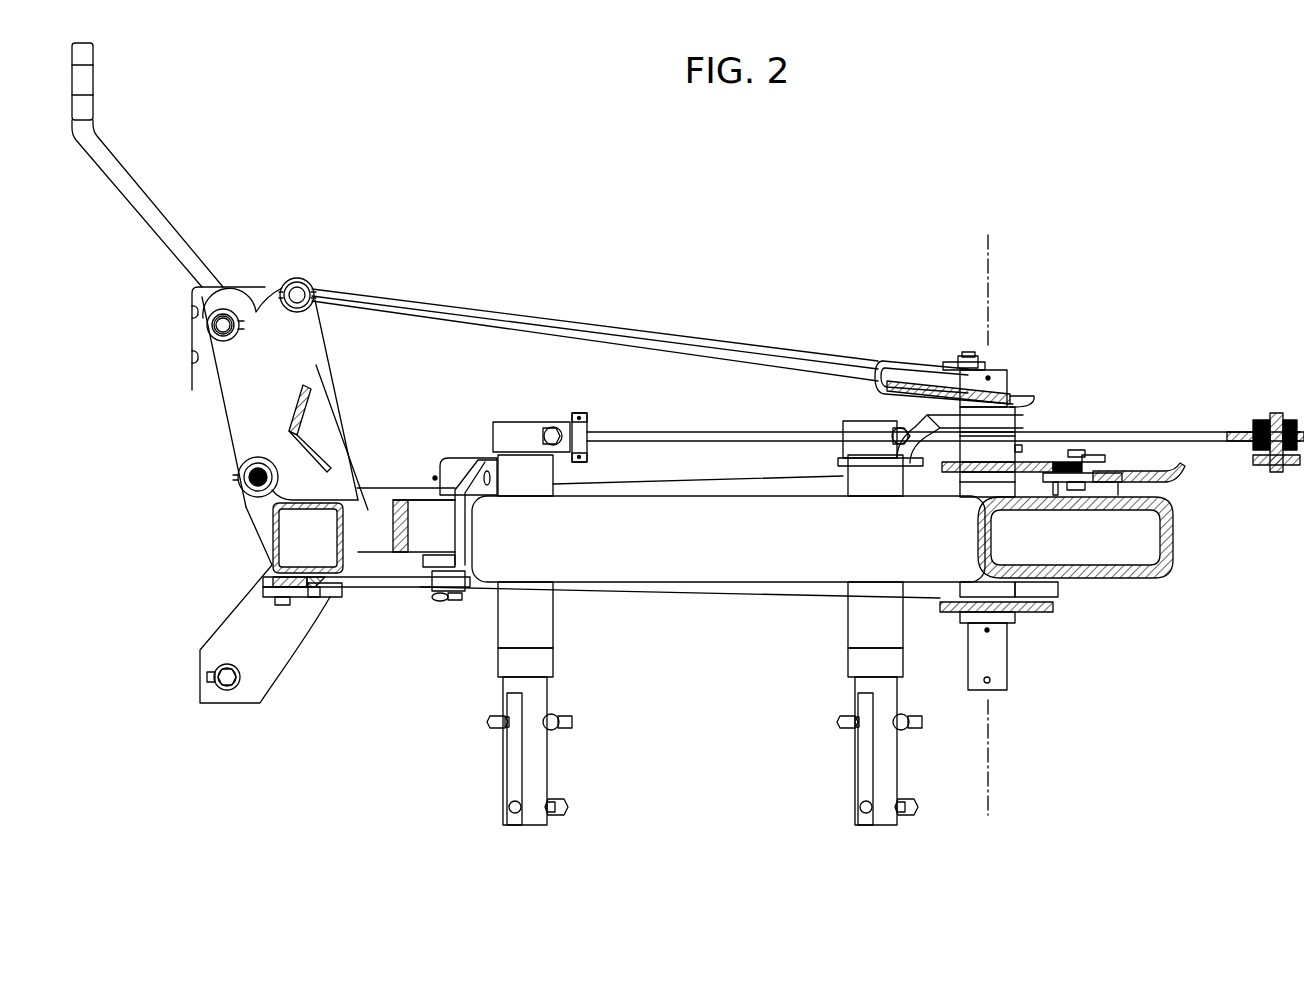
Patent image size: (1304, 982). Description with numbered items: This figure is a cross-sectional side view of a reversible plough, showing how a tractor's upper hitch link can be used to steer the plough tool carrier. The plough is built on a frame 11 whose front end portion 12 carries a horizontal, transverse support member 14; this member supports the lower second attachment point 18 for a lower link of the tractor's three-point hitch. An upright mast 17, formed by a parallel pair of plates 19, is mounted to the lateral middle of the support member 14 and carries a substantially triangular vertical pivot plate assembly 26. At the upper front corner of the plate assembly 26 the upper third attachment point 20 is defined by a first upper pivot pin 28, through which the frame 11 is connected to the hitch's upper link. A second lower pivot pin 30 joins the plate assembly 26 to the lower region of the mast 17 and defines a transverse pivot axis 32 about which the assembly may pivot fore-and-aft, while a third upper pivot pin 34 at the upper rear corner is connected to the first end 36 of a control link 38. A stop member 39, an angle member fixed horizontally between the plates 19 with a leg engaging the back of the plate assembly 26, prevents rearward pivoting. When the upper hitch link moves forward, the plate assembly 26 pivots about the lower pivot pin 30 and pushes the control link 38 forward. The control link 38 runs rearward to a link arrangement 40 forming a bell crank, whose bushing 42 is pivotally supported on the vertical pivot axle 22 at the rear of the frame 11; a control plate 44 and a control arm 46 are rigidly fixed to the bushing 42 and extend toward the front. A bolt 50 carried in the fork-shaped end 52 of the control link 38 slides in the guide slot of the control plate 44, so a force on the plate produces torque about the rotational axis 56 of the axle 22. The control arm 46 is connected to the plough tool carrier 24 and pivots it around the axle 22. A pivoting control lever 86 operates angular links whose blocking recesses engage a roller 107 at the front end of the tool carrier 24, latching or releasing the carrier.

The frame 11 is at (862, 619).
The front end portion 12 is at (302, 581).
The support member 14 is at (347, 560).
The upright mast 17 is at (276, 371).
The lower second attachment point 18 is at (217, 667).
The plates 19 is at (380, 508).
The upper third attachment point 20 is at (213, 323).
The vertical pivot axle 22 is at (997, 653).
The plough tool carrier 24 is at (738, 553).
The vertical pivot plate assembly 26 is at (208, 393).
The first upper pivot pin 28 is at (223, 322).
The second lower pivot pin 30 is at (245, 480).
The transverse pivot axis 32 is at (262, 474).
The third upper pivot pin 34 is at (290, 283).
The first end 36 is at (305, 297).
The control link 38 is at (710, 352).
The stop member 39 is at (313, 415).
The link arrangement 40 is at (1001, 490).
The bushing 42 is at (1012, 382).
The control plate 44 is at (927, 382).
The control arm 46 is at (928, 453).
The bolt 50 is at (966, 357).
The fork-shaped end 52 is at (880, 363).
The rotational axis 56 is at (988, 770).
The control lever 86 is at (127, 167).
The roller 107 is at (460, 582).